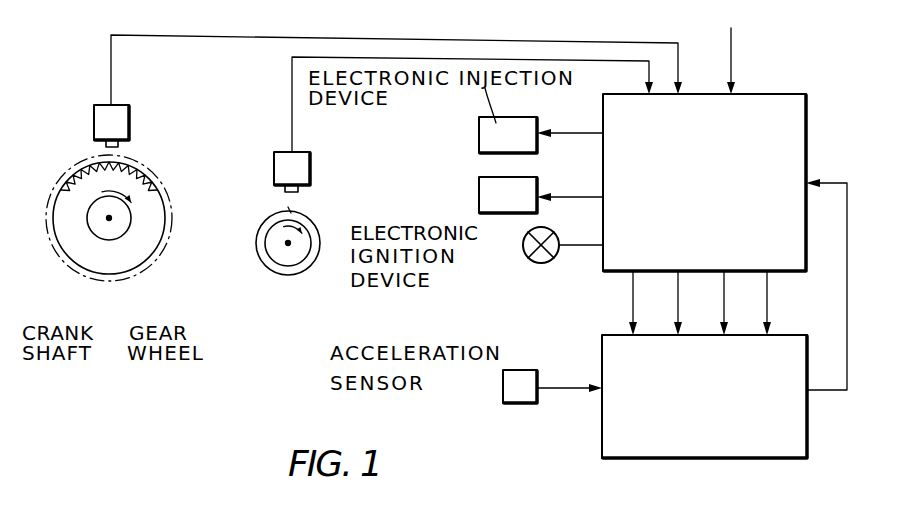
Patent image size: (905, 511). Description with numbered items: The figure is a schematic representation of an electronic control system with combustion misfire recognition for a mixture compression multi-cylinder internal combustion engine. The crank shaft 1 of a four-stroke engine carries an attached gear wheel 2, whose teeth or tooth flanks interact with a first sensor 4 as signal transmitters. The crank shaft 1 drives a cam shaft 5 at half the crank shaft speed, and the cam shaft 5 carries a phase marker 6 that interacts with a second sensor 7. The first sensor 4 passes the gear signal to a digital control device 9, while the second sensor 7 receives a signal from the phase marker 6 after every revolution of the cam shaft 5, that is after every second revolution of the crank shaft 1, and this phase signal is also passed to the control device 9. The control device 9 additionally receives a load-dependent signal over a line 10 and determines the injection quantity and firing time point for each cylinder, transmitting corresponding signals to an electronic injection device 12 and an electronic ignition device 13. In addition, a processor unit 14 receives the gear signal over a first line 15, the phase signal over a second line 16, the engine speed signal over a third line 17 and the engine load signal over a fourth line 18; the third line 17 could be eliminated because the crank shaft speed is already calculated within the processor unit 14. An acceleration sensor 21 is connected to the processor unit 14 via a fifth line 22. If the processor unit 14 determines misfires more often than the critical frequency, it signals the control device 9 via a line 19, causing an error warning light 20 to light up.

The crank shaft 1 is at (106, 228).
The gear wheel 2 is at (130, 274).
The first sensor 4 is at (130, 124).
The cam shaft 5 is at (287, 258).
The phase marker 6 is at (290, 203).
The second sensor 7 is at (311, 167).
The digital control device 9 is at (690, 204).
The line 10 is at (732, 48).
The electronic injection device 12 is at (478, 130).
The electronic ignition device 13 is at (478, 190).
The processor unit 14 is at (683, 409).
The first line 15 is at (630, 296).
The second line 16 is at (678, 296).
The third line 17 is at (722, 296).
The fourth line 18 is at (767, 296).
The line 19 is at (848, 302).
The error warning light 20 is at (526, 253).
The acceleration sensor 21 is at (515, 395).
The fifth line 22 is at (557, 389).